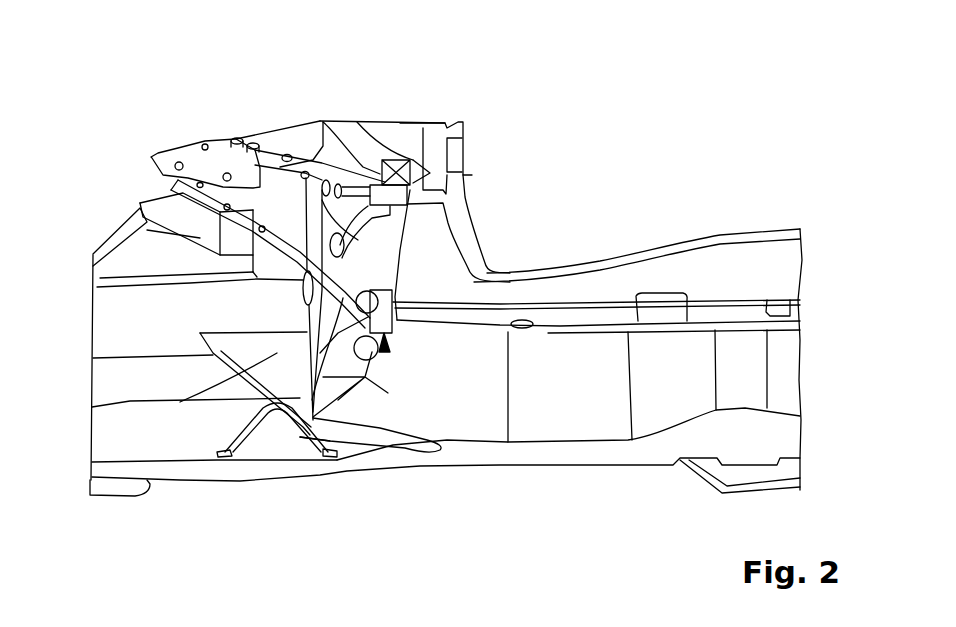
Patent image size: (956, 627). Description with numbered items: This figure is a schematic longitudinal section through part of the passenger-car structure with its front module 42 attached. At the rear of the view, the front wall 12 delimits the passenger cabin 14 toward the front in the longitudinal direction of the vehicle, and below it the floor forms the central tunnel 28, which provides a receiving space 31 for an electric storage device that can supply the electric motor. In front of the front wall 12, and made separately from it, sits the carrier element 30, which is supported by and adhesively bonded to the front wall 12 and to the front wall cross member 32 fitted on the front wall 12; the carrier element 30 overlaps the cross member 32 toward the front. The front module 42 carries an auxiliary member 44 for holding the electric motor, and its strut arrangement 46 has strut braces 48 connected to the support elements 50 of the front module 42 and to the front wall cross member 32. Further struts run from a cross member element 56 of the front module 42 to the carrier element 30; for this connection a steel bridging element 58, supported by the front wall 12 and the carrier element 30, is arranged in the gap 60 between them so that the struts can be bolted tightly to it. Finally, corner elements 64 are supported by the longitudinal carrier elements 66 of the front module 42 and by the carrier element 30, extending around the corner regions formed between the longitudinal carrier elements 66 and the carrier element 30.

The front wall 12 is at (390, 268).
The passenger cabin 14 is at (740, 184).
The central tunnel 28 is at (587, 313).
The carrier element 30 is at (362, 435).
The receiving space 31 is at (600, 410).
The front wall cross member 32 is at (378, 130).
The front module 42 is at (150, 513).
The auxiliary member 44 is at (295, 470).
The strut arrangement 46 is at (312, 121).
The strut braces 48 is at (275, 157).
The support elements 50 is at (197, 143).
The cross member element 56 is at (204, 192).
The bridging element 58 is at (392, 346).
The gap 60 is at (386, 352).
The corner elements 64 is at (92, 407).
The longitudinal carrier elements 66 is at (128, 313).